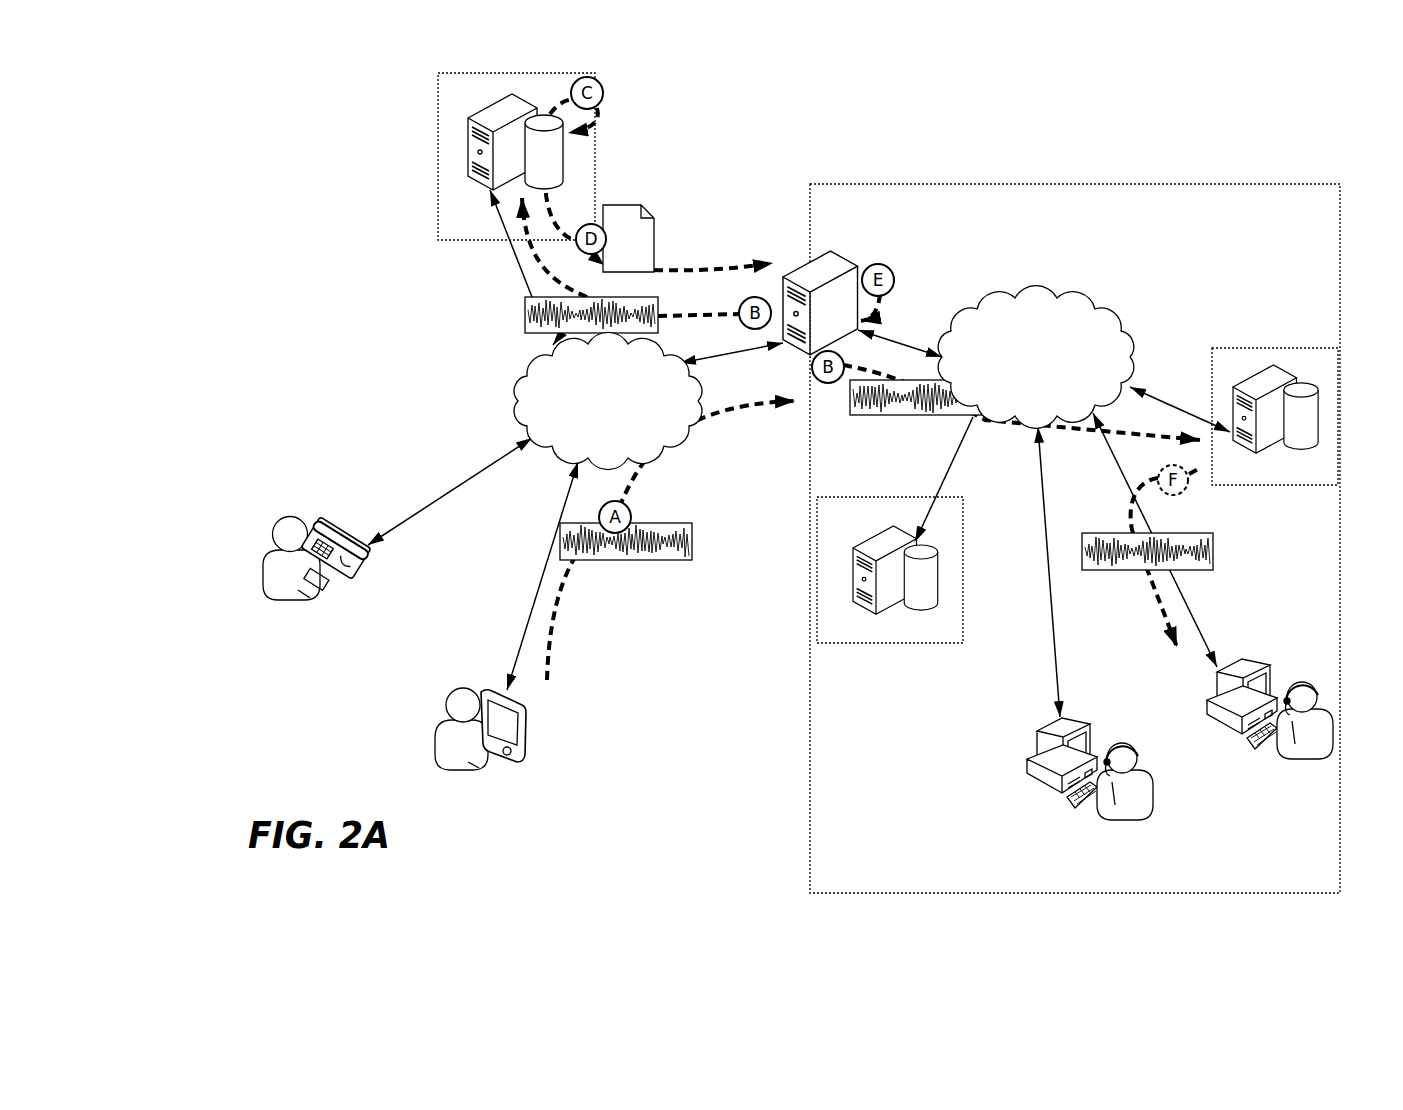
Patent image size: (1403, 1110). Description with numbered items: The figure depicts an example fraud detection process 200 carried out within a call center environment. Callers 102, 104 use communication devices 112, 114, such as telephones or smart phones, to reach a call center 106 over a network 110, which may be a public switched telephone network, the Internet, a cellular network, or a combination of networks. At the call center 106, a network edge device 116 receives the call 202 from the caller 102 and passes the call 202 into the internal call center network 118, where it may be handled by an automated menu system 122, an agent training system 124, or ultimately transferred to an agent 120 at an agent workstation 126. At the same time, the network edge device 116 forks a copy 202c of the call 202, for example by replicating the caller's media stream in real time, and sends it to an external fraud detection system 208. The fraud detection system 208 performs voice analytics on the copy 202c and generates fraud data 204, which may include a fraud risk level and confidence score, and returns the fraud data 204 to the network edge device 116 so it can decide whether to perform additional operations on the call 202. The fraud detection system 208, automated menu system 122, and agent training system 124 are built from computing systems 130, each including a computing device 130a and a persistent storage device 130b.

The fraud detection process 200 is at (312, 213).
The fraud detection system 208 is at (516, 156).
The computing system 130 is at (835, 372).
The computing device 130a is at (463, 162).
The persistent storage device 130b is at (548, 120).
The network edge device 116 is at (803, 270).
The fraud data 204 is at (653, 257).
The copy of the call 202c is at (525, 327).
The call 202 is at (875, 417).
The network 110 is at (608, 400).
The call center 106 is at (1075, 538).
The call center network 118 is at (1036, 357).
The agent training system 124 is at (890, 570).
The automated menu system 122 is at (1275, 416).
The caller 104 is at (307, 600).
The communication device 114 is at (352, 570).
The caller 102 is at (488, 765).
The communication device 112 is at (523, 727).
The agent workstation 126 is at (1060, 793).
The agent 120 is at (1118, 803).